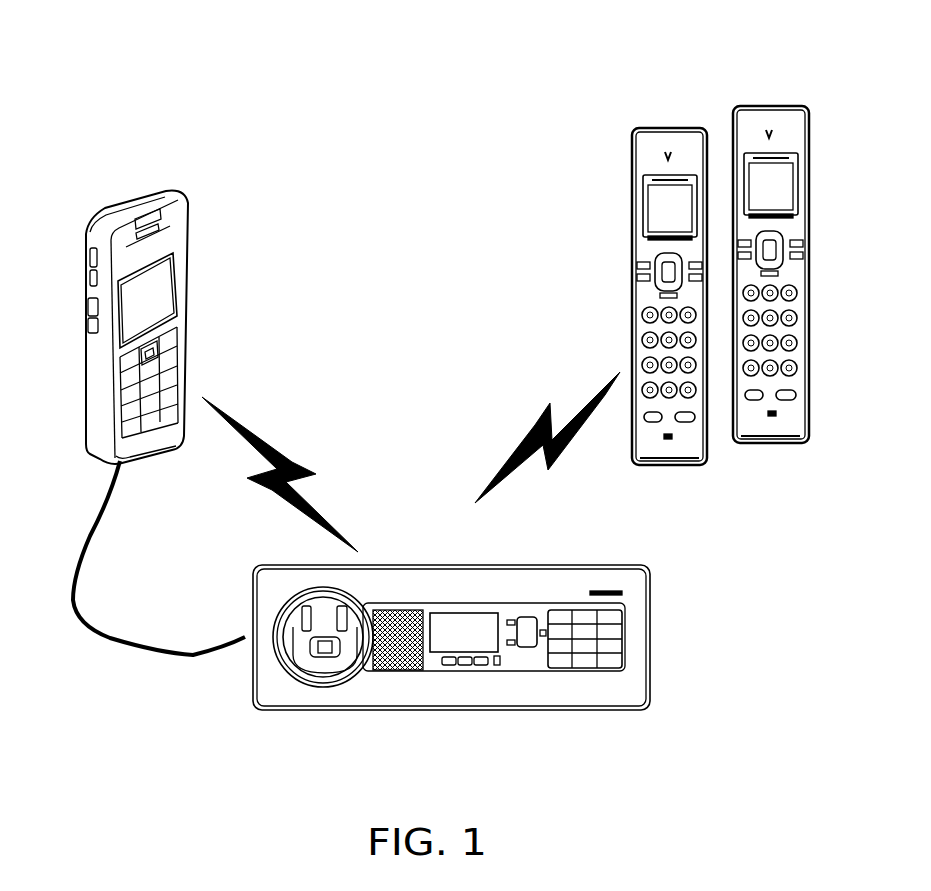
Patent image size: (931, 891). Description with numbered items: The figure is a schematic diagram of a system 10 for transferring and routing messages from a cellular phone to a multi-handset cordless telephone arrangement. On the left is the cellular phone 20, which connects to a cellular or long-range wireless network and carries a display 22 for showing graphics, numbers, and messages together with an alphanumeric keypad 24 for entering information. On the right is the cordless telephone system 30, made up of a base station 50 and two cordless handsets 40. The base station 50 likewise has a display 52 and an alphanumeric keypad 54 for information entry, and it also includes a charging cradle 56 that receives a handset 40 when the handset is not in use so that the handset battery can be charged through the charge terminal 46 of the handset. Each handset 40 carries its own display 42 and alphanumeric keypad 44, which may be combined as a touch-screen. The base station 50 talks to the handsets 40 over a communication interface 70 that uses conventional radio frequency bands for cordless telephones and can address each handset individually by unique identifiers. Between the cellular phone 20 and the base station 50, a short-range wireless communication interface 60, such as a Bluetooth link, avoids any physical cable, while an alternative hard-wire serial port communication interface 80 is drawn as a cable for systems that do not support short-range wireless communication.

The system 10 is at (139, 63).
The cellular phone 20 is at (100, 215).
The display 22 is at (163, 268).
The alphanumeric keypad 24 is at (178, 352).
The cordless telephone system 30 is at (838, 415).
The cordless handset 40 is at (633, 163).
The display 42 is at (653, 198).
The alphanumeric keypad 44 is at (663, 335).
The charge terminal 46 is at (664, 467).
The base station 50 is at (448, 565).
The display 52 is at (463, 643).
The alphanumeric keypad 54 is at (583, 660).
The charging cradle 56 is at (310, 675).
The wireless communication interface 60 is at (275, 451).
The communication interface 70 is at (520, 443).
The hard-wire serial port communication interface 80 is at (80, 600).